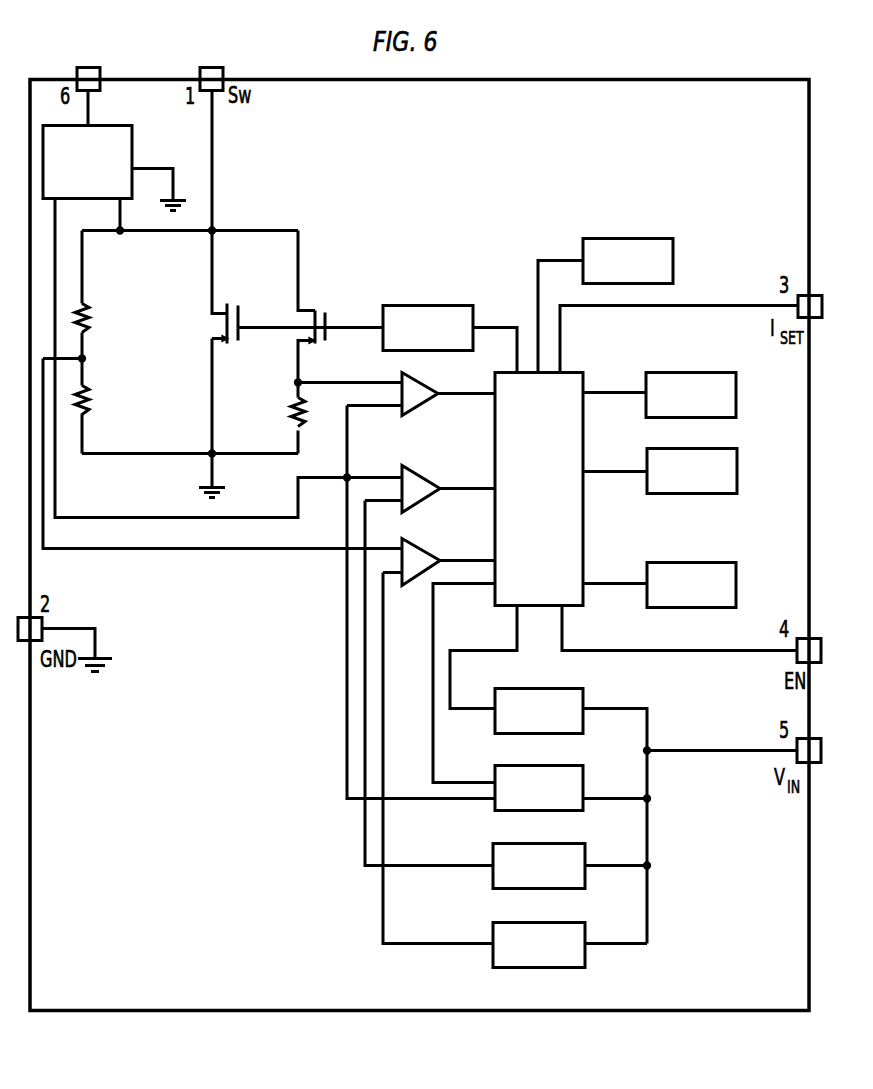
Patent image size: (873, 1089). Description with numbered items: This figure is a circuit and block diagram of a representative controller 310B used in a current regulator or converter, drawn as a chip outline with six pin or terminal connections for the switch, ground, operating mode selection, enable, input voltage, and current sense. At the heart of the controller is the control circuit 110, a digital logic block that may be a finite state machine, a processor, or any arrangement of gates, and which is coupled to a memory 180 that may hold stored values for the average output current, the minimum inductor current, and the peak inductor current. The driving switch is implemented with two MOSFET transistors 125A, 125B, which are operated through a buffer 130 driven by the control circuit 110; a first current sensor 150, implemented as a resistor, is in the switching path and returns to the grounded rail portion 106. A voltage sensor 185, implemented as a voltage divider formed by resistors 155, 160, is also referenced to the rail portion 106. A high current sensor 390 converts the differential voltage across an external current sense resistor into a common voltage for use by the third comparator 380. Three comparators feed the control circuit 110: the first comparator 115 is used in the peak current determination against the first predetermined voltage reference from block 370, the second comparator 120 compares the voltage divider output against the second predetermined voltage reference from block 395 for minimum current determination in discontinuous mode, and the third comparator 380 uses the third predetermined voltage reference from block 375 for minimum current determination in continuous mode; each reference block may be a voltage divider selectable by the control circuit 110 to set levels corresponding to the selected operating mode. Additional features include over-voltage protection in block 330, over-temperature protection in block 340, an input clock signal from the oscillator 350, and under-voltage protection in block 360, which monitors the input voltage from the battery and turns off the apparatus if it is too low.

The controller 310B is at (118, 1010).
The high current sensor 390 is at (132, 140).
The resistor 155 is at (82, 303).
The resistor 160 is at (107, 393).
The voltage sensor 185 is at (112, 342).
The rail portion 106 is at (260, 453).
The MOSFET transistor 125A is at (227, 303).
The MOSFET transistor 125B is at (315, 310).
The first current sensor 150 is at (292, 415).
The buffer 130 is at (425, 303).
The first comparator 115 is at (432, 400).
The third comparator 380 is at (420, 472).
The second comparator 120 is at (420, 547).
The control circuit 110 is at (583, 438).
The memory 180 is at (627, 238).
The over-voltage protection block 330 is at (736, 392).
The over-temperature protection block 340 is at (737, 471).
The oscillator 350 is at (736, 583).
The under-voltage protection block 360 is at (495, 725).
The first predetermined voltage reference generator 370 is at (583, 777).
The third predetermined voltage reference generator 375 is at (585, 853).
The second predetermined voltage reference generator 395 is at (585, 930).